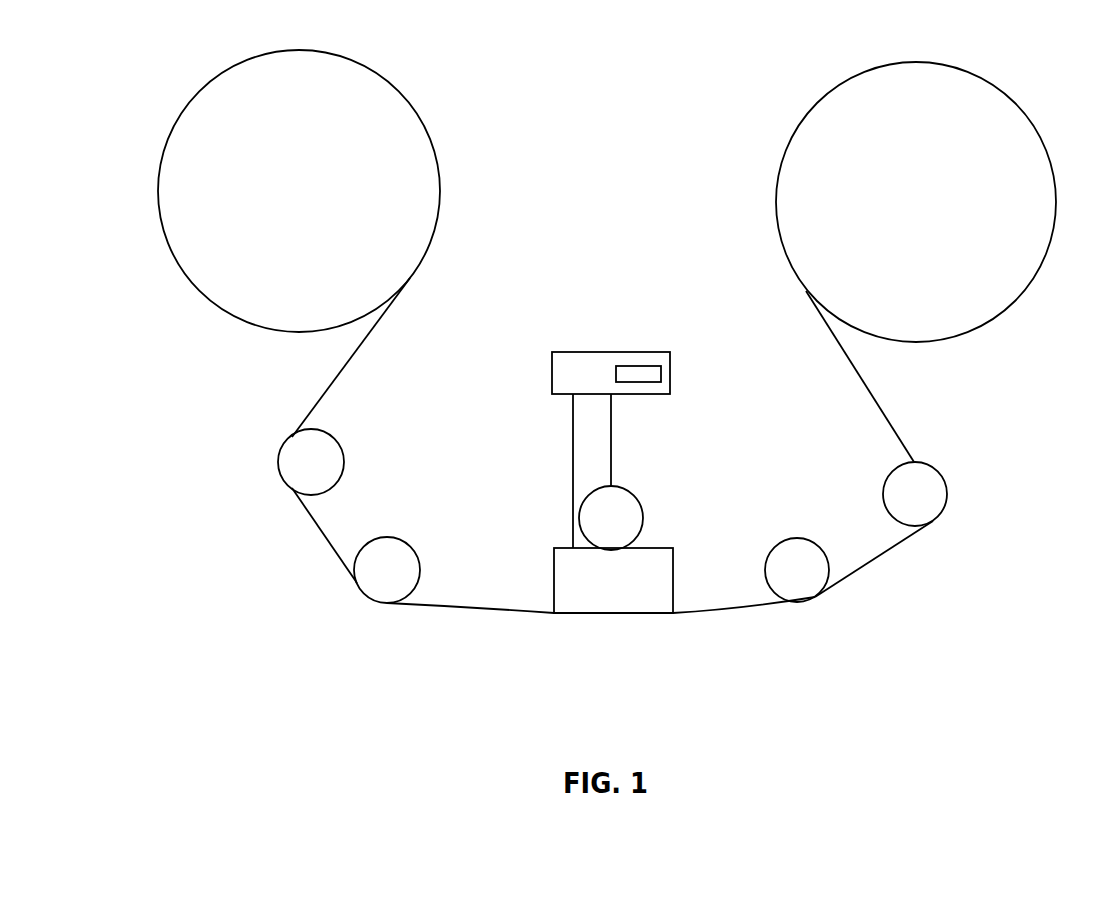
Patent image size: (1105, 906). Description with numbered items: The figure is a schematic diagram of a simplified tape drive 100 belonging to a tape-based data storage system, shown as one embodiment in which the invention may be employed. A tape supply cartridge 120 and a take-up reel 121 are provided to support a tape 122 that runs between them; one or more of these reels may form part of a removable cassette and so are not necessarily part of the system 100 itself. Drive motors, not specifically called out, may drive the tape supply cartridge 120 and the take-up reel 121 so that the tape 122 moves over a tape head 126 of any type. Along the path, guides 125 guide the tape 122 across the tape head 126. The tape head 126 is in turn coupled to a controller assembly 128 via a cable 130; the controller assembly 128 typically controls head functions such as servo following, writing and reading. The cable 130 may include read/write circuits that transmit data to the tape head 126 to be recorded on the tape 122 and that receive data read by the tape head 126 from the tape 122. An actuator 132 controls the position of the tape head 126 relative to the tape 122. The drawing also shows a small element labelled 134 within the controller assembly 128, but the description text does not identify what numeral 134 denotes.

The tape drive 100 is at (256, 387).
The tape supply cartridge 120 is at (438, 160).
The take-up reel 121 is at (1002, 314).
The tape 122 is at (475, 610).
The guides 125 is at (387, 537).
The tape head 126 is at (673, 578).
The controller assembly 128 is at (609, 352).
The cable 130 is at (571, 514).
The actuator 132 is at (633, 493).
The read/write element 134 is at (650, 366).